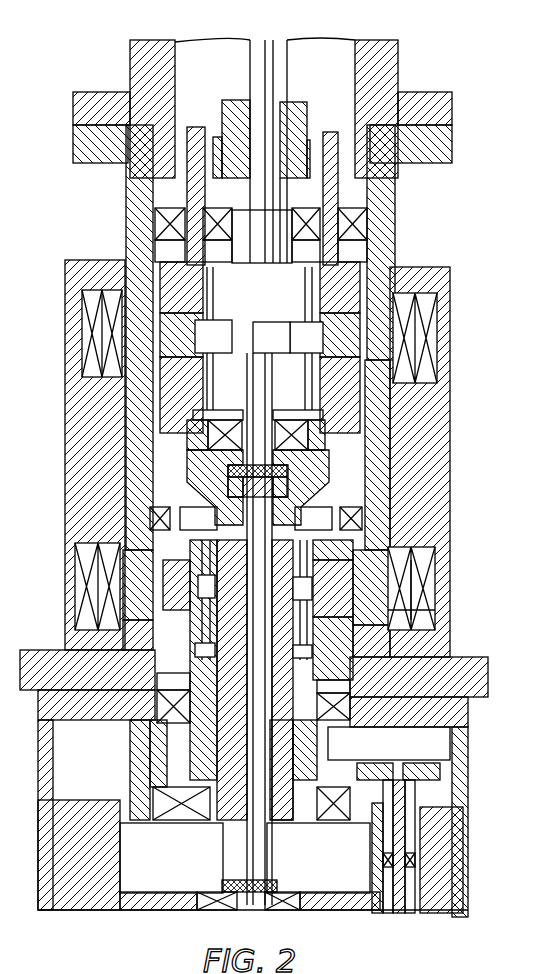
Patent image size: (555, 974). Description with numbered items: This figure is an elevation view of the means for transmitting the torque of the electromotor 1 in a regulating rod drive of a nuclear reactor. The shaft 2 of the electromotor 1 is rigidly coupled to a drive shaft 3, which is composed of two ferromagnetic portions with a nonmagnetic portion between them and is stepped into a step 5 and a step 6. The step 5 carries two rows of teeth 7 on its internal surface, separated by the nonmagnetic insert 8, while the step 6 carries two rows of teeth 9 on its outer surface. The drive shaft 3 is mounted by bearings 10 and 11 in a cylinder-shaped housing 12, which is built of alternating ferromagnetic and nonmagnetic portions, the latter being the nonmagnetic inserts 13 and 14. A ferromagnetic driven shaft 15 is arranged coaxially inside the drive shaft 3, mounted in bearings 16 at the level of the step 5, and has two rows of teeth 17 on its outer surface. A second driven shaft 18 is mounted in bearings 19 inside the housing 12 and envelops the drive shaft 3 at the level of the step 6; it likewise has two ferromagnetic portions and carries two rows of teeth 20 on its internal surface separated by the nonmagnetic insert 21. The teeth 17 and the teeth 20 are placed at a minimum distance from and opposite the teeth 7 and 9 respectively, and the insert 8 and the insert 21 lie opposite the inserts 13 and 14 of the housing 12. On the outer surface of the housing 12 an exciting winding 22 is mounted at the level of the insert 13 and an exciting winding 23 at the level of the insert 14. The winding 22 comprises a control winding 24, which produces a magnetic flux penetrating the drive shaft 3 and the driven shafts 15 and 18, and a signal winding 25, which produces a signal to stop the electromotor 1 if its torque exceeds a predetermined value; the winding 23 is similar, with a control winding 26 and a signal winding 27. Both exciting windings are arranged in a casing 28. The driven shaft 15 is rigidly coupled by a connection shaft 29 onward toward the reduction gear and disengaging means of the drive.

The electromotor 1 is at (405, 74).
The shaft 2 is at (272, 65).
The drive shaft 3 is at (326, 460).
The step 5 is at (368, 265).
The step 6 is at (270, 669).
The teeth 7 is at (318, 362).
The nonmagnetic insert 8 is at (198, 327).
The teeth 9 is at (205, 560).
The bearing 10 is at (163, 222).
The bearing 11 is at (176, 825).
The cylinder-shaped housing 12 is at (385, 403).
The nonmagnetic insert 13 is at (150, 300).
The nonmagnetic insert 14 is at (122, 630).
The driven shaft 15 is at (208, 405).
The bearings 16 is at (213, 218).
The teeth 17 is at (295, 360).
The second driven shaft 18 is at (178, 663).
The bearings 19 is at (345, 520).
The teeth 20 is at (300, 608).
The nonmagnetic insert 21 is at (405, 616).
The exciting winding 22 is at (72, 368).
The exciting winding 23 is at (58, 582).
The control winding 24 is at (95, 298).
The signal winding 25 is at (88, 341).
The control winding 26 is at (405, 593).
The signal winding 27 is at (418, 565).
The casing 28 is at (425, 440).
The connection shaft 29 is at (242, 836).